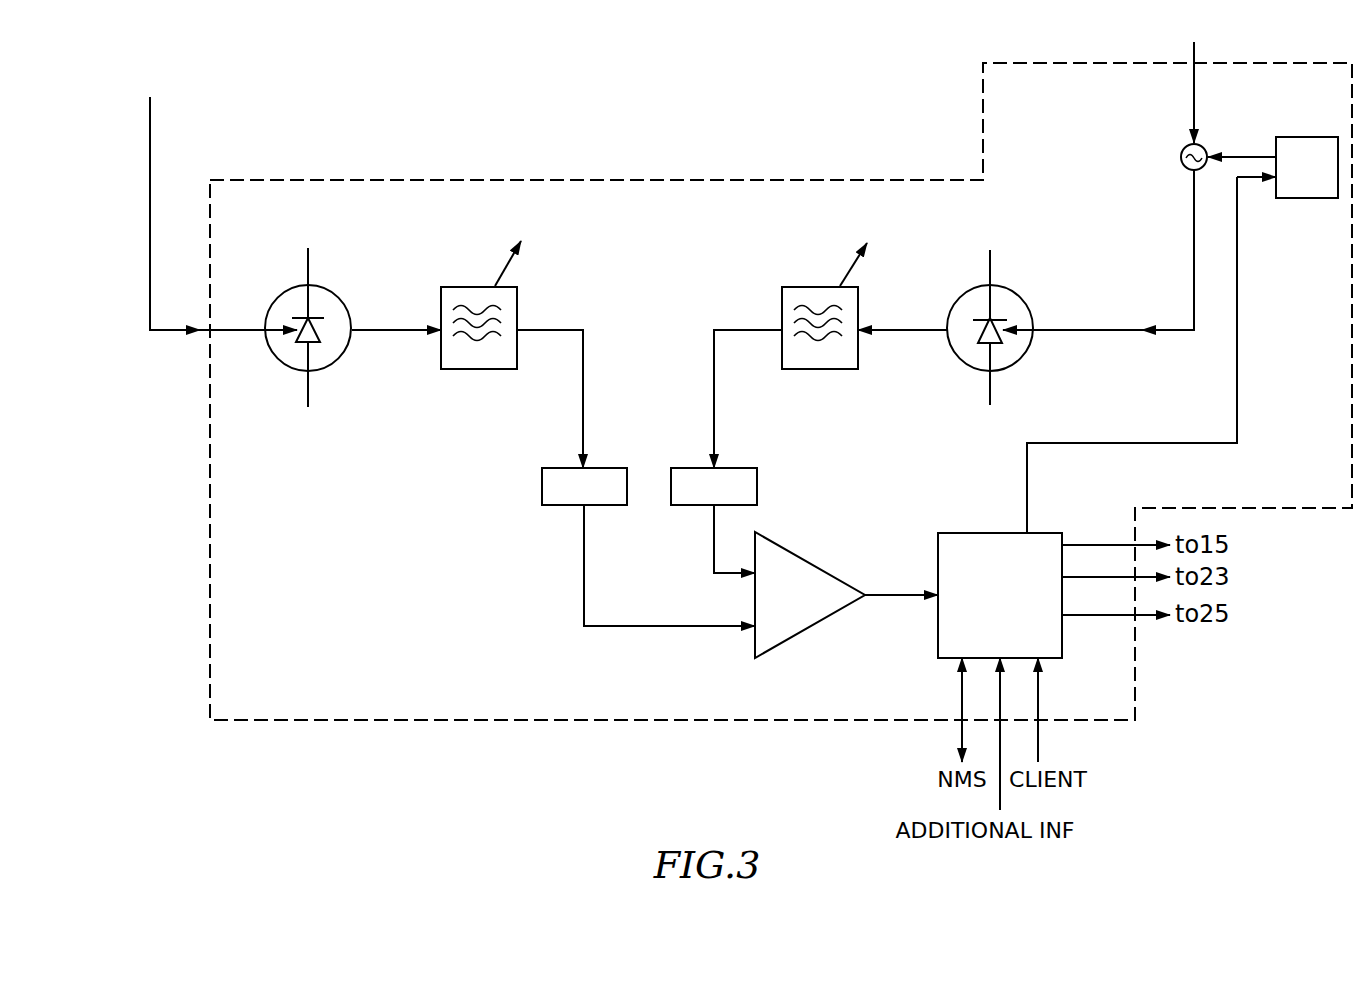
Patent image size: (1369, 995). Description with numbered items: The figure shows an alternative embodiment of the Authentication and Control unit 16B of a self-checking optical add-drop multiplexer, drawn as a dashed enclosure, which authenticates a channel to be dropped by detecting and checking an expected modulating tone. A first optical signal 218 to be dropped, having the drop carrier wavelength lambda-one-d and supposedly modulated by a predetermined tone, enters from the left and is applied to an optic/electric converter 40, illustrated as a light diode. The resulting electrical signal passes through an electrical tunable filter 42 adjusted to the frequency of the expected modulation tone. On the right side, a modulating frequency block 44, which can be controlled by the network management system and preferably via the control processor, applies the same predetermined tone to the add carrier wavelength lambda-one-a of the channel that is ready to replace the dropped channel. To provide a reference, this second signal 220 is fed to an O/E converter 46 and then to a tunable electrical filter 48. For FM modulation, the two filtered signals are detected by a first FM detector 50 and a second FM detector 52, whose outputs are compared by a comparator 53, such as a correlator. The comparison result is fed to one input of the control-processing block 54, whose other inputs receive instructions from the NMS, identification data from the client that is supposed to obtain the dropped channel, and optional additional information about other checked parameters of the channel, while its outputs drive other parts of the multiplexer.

The Authentication and Control unit 16B is at (255, 723).
The first optical signal 218 is at (157, 134).
The optic/electric converter 40 is at (305, 370).
The electrical tunable filter 42 is at (473, 370).
The modulating frequency block 44 is at (1182, 335).
The O/E converter 46 is at (990, 372).
The tunable electrical filter 48 is at (815, 369).
The FM detector 50 is at (540, 492).
The FM detector 52 is at (757, 490).
The comparator 53 is at (813, 625).
The control-processing block 54 is at (1000, 530).
The second signal 220 is at (1190, 275).